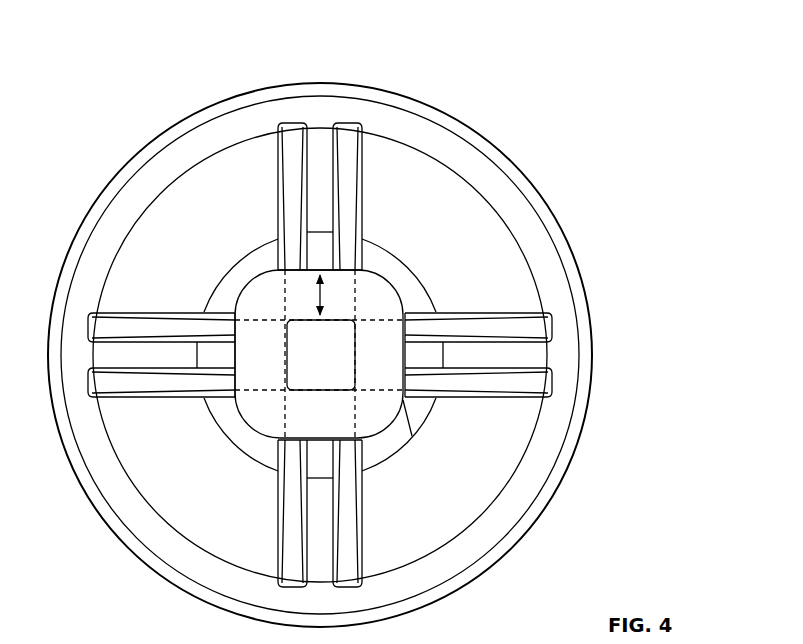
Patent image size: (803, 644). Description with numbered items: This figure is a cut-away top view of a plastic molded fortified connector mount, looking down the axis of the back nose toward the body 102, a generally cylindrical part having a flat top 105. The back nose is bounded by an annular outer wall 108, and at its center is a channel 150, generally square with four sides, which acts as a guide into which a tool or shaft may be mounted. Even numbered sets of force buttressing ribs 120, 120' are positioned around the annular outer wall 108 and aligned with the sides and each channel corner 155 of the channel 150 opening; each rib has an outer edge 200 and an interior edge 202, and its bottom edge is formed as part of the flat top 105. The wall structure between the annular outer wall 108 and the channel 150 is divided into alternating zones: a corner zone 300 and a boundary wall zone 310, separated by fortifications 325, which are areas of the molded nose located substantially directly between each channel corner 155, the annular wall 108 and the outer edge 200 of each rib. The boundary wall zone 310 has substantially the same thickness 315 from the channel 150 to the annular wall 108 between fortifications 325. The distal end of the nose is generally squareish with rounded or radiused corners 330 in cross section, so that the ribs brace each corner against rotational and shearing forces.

The body 102 is at (124, 172).
The flat top 105 is at (136, 294).
The annular outer wall 108 is at (383, 262).
The force buttressing rib 120 is at (501, 327).
The force buttressing rib 120' is at (505, 410).
The channel 150 is at (302, 362).
The channel corner 155 is at (205, 312).
The outer edge 200 is at (326, 158).
The interior edge 202 is at (308, 180).
The corner zone 300 is at (373, 290).
The boundary wall zone 310 is at (240, 362).
The thickness 315 is at (277, 320).
The fortification 325 is at (277, 426).
The rounded corner 330 is at (370, 445).